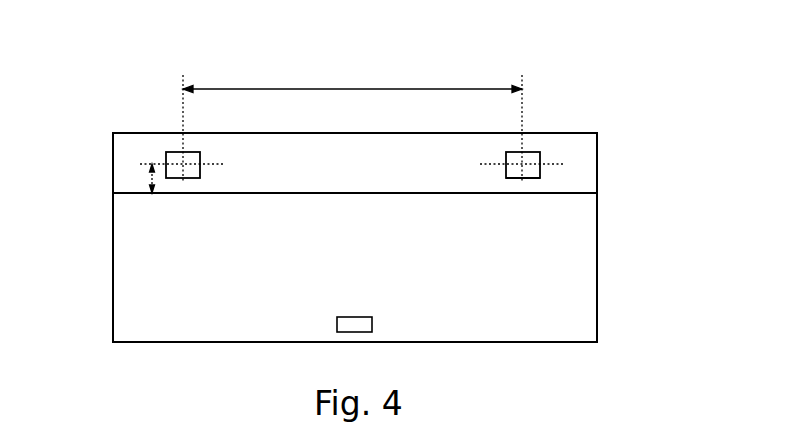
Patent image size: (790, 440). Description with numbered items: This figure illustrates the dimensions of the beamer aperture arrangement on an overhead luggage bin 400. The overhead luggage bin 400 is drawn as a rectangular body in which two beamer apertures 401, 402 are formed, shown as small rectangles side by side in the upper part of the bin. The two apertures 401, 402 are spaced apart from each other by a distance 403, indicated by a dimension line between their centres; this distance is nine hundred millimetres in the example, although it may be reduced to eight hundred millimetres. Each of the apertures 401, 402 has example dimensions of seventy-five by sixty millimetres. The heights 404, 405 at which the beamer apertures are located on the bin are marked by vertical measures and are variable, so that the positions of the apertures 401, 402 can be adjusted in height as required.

The overhead luggage bin 400 is at (598, 272).
The aperture 401 is at (177, 151).
The aperture 402 is at (528, 151).
The distance 403 is at (302, 88).
The height 404 is at (150, 180).
The height 405 is at (522, 183).